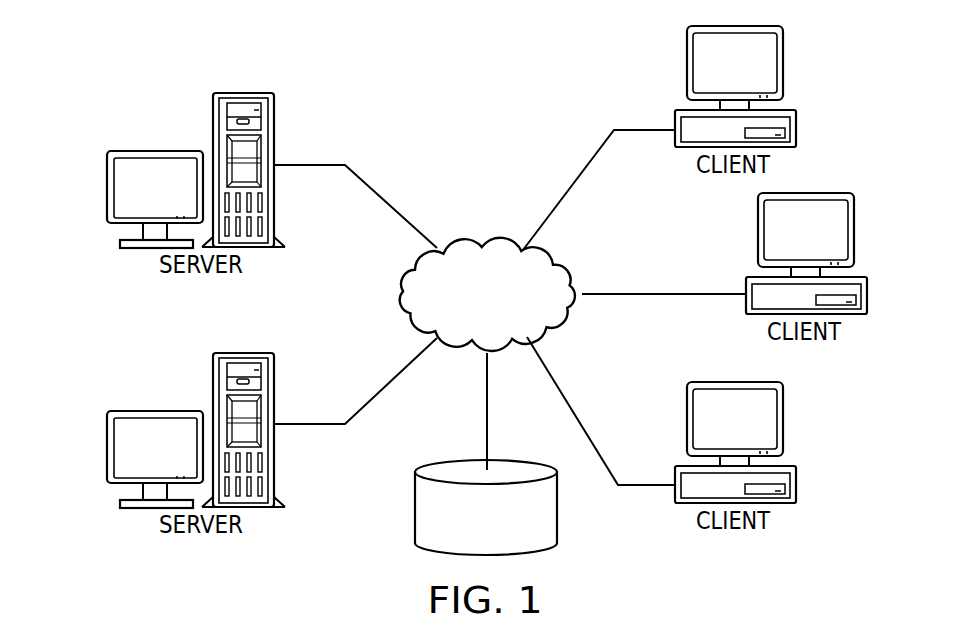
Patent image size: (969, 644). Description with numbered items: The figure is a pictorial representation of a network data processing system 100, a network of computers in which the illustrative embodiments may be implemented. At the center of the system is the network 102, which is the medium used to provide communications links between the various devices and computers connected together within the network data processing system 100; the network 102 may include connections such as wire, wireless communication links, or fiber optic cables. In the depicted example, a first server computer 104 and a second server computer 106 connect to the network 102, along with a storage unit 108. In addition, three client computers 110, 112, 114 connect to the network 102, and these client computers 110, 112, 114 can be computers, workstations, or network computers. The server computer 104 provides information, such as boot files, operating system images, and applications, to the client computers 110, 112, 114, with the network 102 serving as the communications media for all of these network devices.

The network data processing system 100 is at (349, 70).
The network 102 is at (460, 238).
The server computer 104 is at (107, 187).
The server computer 106 is at (107, 447).
The storage unit 108 is at (415, 503).
The client computer 110 is at (798, 119).
The client computer 112 is at (868, 304).
The client computer 114 is at (795, 493).